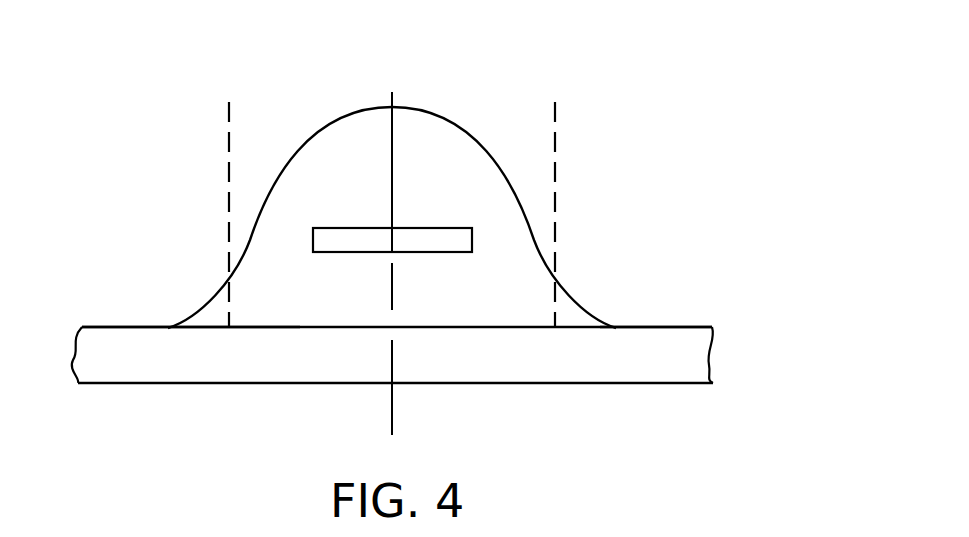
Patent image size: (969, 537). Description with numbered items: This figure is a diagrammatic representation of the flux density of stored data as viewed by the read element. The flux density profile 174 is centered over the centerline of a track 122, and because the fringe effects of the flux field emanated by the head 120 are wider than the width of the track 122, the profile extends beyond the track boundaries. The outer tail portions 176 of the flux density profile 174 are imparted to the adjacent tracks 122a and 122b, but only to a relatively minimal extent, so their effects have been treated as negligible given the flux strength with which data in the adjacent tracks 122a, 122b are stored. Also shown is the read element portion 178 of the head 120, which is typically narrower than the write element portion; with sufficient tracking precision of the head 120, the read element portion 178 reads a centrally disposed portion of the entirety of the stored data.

The head 120 is at (421, 210).
The track 122 is at (447, 328).
The adjacent track 122a is at (108, 327).
The adjacent track 122b is at (653, 327).
The flux density profile 174 is at (353, 112).
The tail portions 176 is at (217, 315).
The read element portion 178 is at (373, 228).